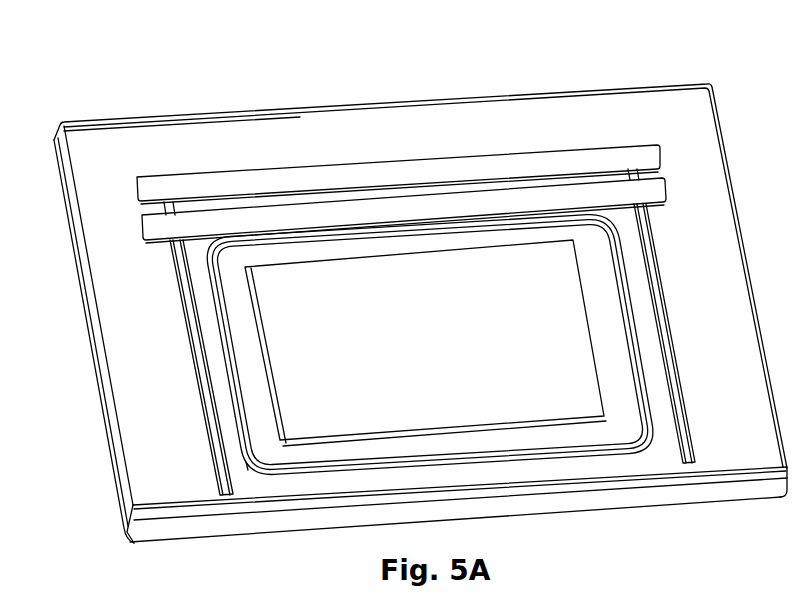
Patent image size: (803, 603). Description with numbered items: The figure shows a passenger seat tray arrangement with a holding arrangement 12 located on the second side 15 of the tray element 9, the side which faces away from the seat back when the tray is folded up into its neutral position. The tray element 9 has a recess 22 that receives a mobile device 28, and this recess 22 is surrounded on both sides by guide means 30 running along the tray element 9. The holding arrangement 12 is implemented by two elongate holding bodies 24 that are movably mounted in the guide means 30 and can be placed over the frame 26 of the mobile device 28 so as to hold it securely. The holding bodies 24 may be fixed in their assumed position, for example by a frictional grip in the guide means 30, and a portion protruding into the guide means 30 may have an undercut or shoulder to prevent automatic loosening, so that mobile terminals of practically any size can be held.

The holding arrangement 12 is at (456, 98).
The tray element 9 is at (148, 491).
The second side 15 is at (630, 131).
The holding bodies 24 is at (169, 188).
The guide means 30 is at (200, 373).
The frame 26 is at (615, 347).
The mobile device 28 is at (553, 330).
The recess 22 is at (242, 485).